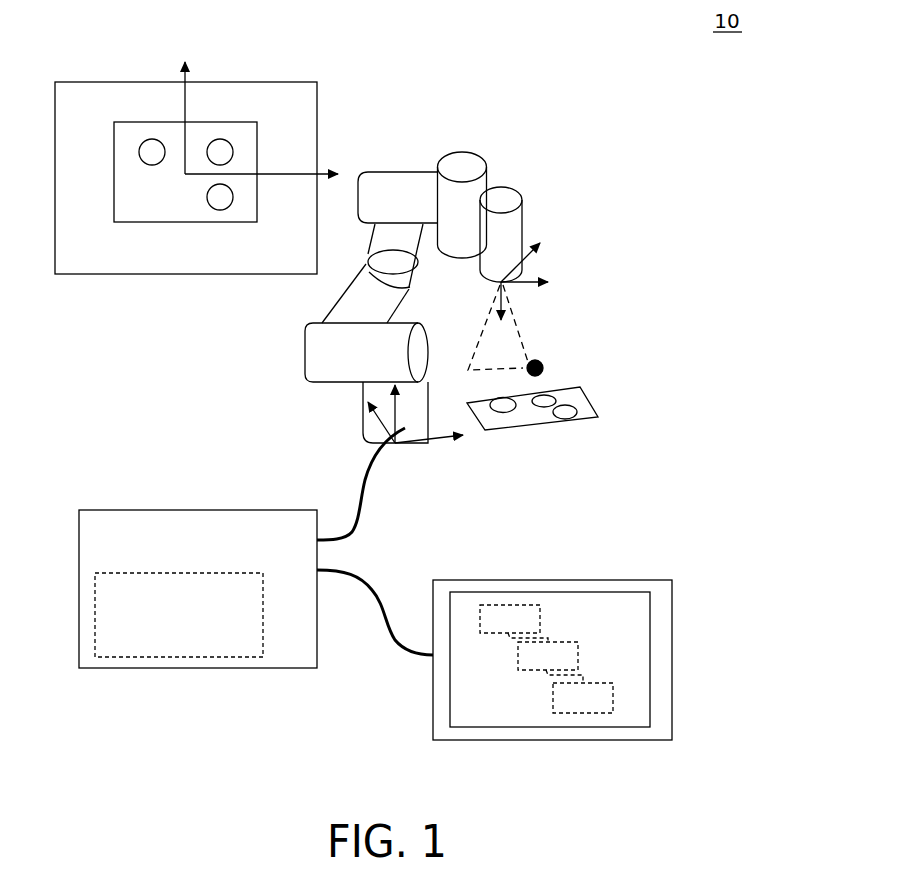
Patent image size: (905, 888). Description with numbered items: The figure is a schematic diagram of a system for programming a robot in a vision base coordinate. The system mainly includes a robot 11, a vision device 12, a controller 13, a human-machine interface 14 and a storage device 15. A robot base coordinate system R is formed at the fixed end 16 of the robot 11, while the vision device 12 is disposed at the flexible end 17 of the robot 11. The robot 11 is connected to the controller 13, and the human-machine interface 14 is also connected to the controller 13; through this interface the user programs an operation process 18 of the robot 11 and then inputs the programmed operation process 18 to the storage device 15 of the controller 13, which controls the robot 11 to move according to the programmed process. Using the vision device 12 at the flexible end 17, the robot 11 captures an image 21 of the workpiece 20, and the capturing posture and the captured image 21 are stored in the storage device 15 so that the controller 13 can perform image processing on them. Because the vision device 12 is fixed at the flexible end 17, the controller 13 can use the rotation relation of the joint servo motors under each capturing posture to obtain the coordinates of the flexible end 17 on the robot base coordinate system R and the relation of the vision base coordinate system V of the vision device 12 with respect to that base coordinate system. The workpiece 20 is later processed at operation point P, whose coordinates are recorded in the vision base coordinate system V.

The robot 11 is at (310, 350).
The vision device 12 is at (523, 222).
The controller 13 is at (158, 508).
The human-machine interface 14 is at (633, 580).
The storage device 15 is at (225, 653).
The fixed end 16 is at (363, 413).
The flexible end 17 is at (472, 152).
The operation process 18 is at (612, 695).
The workpiece 20 is at (568, 423).
The image 21 is at (133, 82).